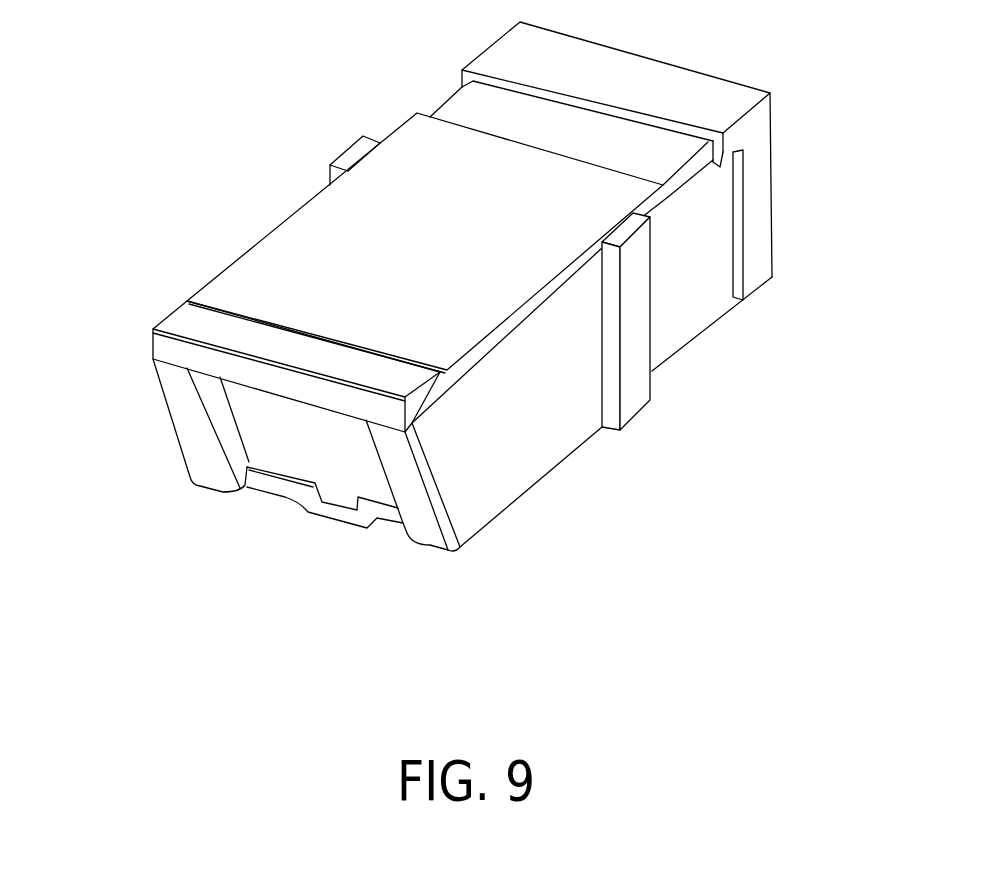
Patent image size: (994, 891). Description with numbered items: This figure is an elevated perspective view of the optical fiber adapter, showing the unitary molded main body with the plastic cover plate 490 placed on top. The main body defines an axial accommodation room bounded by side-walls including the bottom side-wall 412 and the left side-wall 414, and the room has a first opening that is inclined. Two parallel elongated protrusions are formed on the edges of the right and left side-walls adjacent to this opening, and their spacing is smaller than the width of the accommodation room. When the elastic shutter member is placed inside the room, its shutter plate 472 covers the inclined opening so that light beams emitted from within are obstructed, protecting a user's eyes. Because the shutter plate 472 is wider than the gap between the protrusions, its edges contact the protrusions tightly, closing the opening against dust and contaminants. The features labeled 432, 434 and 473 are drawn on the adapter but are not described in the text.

The bottom side-wall 412 is at (480, 530).
The left side-wall 414 is at (545, 415).
The tab 432 is at (352, 157).
The post 434 is at (613, 393).
The shutter plate 472 is at (270, 417).
The notch 473 is at (338, 491).
The plastic cover plate 490 is at (277, 273).